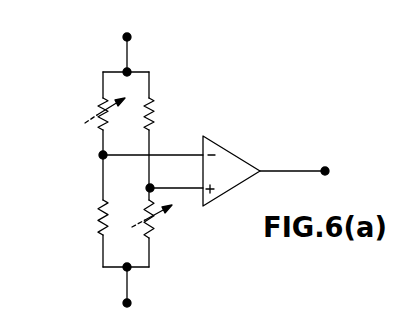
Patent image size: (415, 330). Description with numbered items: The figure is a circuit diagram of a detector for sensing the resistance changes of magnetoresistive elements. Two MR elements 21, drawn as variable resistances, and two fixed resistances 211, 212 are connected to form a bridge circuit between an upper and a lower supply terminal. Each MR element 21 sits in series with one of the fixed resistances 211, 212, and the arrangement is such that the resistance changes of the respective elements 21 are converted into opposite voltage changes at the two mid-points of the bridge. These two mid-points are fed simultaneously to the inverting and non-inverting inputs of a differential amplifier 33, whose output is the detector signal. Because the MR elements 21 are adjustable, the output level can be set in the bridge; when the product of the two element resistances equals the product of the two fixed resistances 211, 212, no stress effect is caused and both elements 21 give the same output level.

The MR element 21 is at (101, 110).
The fixed resistance 211 is at (153, 108).
The fixed resistance 212 is at (100, 232).
The differential amplifier 33 is at (237, 152).